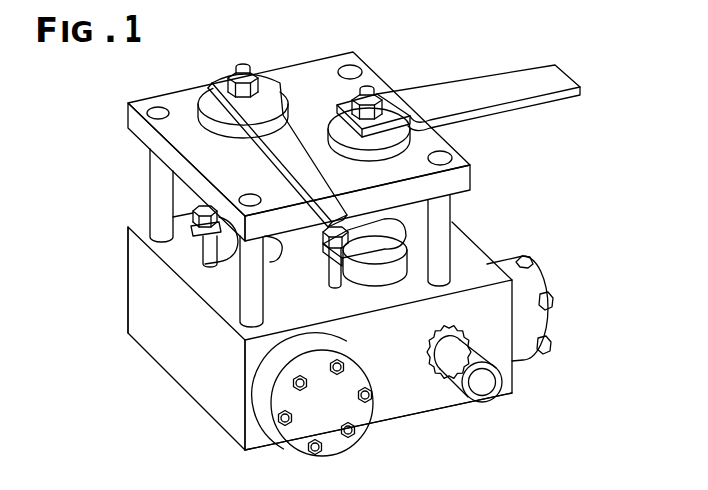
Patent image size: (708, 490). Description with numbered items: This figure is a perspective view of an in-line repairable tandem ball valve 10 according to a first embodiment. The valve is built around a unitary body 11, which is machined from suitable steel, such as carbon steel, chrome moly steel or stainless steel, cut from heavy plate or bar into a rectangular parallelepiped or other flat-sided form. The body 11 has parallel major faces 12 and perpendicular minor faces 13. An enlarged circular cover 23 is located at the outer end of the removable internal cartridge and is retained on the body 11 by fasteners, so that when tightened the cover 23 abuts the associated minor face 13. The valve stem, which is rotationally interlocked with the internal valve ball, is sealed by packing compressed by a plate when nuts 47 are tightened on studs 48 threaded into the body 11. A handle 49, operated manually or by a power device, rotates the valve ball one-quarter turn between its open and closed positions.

The in-line repairable tandem ball valve 10 is at (91, 198).
The unitary body 11 is at (173, 345).
The major faces 12 is at (213, 285).
The minor faces 13 is at (478, 243).
The cover 23 is at (527, 289).
The nuts 47 is at (193, 214).
The studs 48 is at (213, 257).
The handle 49 is at (300, 155).